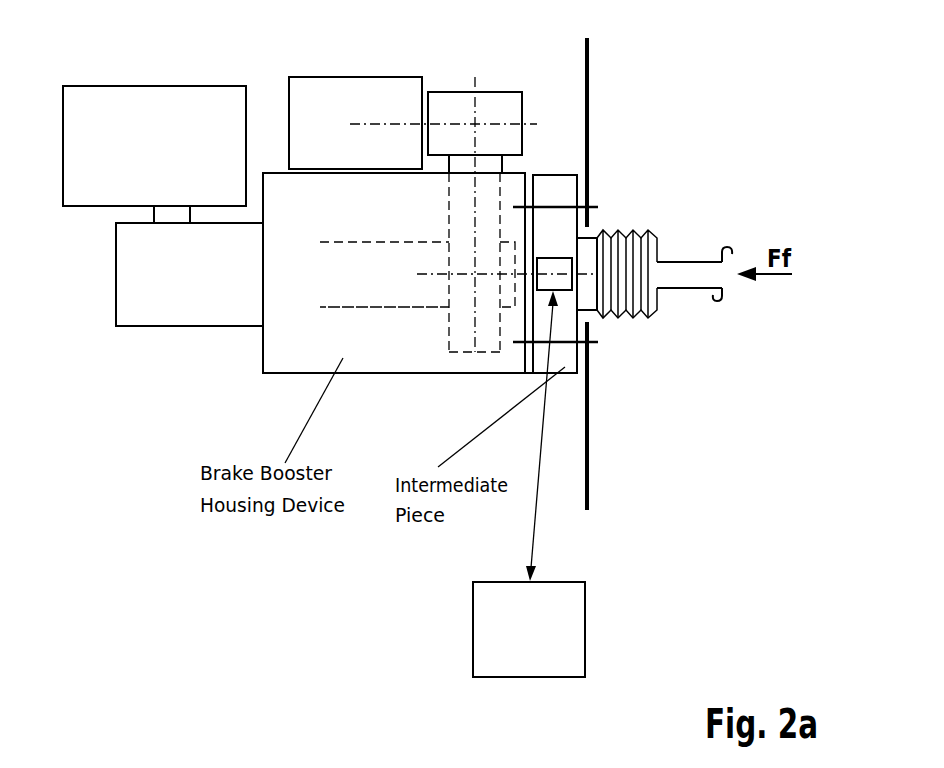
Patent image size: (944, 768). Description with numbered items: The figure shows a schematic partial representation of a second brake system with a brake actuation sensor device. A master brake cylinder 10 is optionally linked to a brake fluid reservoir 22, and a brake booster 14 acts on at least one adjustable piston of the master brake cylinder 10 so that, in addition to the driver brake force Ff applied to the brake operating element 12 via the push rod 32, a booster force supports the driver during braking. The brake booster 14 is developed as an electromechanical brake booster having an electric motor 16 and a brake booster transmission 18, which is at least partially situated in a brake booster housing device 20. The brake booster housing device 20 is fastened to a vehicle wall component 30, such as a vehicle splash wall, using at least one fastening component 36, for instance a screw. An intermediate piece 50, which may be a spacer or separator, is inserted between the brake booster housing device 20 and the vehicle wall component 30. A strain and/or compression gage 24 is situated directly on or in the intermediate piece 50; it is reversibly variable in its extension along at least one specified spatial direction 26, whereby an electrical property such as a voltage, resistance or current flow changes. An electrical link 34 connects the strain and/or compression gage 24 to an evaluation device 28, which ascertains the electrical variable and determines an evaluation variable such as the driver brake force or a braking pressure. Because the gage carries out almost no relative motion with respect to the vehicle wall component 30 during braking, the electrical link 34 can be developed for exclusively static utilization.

The master brake cylinder 10 is at (191, 327).
The brake operating element 12 is at (725, 293).
The brake booster 14 is at (381, 385).
The electric motor 16 is at (355, 77).
The brake booster transmission 18 is at (462, 353).
The brake booster housing device 20 is at (288, 375).
The brake fluid reservoir 22 is at (152, 86).
The strain and/or compression gage 24 is at (553, 258).
The specified spatial direction 26 is at (433, 272).
The evaluation device 28 is at (528, 678).
The vehicle wall component 30 is at (590, 63).
The push rod 32 is at (683, 290).
The electrical link 34 is at (545, 437).
The fastening component 36 is at (593, 204).
The intermediate piece 50 is at (537, 376).